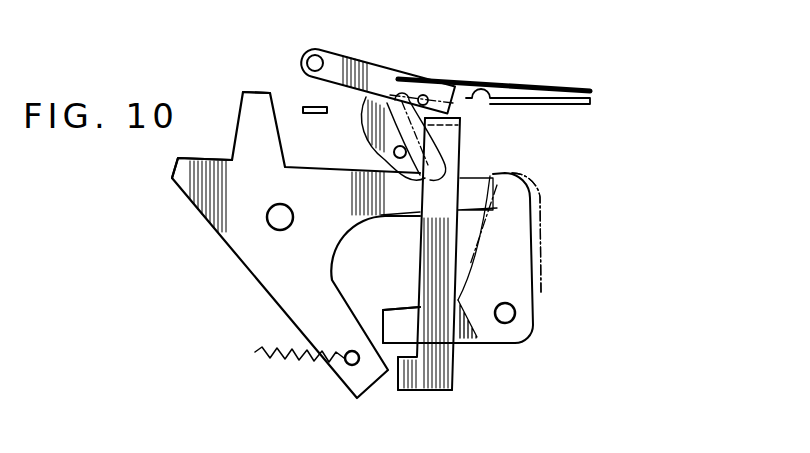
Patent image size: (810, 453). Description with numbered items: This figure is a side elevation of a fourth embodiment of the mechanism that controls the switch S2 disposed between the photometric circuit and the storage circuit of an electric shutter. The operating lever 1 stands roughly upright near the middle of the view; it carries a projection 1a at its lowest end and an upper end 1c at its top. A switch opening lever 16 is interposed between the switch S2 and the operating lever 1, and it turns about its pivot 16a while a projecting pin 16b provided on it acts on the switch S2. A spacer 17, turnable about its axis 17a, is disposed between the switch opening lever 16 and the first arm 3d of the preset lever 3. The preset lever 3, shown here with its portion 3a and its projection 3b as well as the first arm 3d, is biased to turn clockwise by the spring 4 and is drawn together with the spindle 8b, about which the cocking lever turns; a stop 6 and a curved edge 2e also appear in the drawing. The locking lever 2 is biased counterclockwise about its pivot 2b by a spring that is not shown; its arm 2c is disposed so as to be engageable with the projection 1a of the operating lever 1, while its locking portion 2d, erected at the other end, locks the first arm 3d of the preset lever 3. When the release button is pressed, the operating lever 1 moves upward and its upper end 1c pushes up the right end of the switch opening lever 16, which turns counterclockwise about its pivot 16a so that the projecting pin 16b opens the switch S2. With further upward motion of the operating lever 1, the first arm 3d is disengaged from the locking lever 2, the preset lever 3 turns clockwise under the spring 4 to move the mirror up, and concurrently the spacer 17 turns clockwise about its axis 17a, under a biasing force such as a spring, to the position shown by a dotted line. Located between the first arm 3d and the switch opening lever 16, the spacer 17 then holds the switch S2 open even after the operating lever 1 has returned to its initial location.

The operating lever 1 is at (455, 377).
The projection 1a is at (402, 385).
The upper end 1c is at (460, 121).
The locking lever 2 is at (532, 287).
The pivot 2b is at (513, 322).
The arm 2c is at (390, 318).
The locking portion 2d is at (505, 168).
The bracket curved edge 2e is at (477, 248).
The preset lever 3 is at (262, 297).
The lever left arm 3a is at (182, 180).
The lever projection 3b is at (258, 100).
The first arm 3d is at (474, 190).
The spring 4 is at (294, 364).
The stop 6 is at (312, 115).
The spindle 8b is at (272, 230).
The switch opening lever 16 is at (393, 66).
The pivot 16a is at (322, 44).
The projecting pin 16b is at (427, 95).
The spacer 17 is at (370, 127).
The axis 17a is at (393, 153).
The switch S2 is at (520, 82).